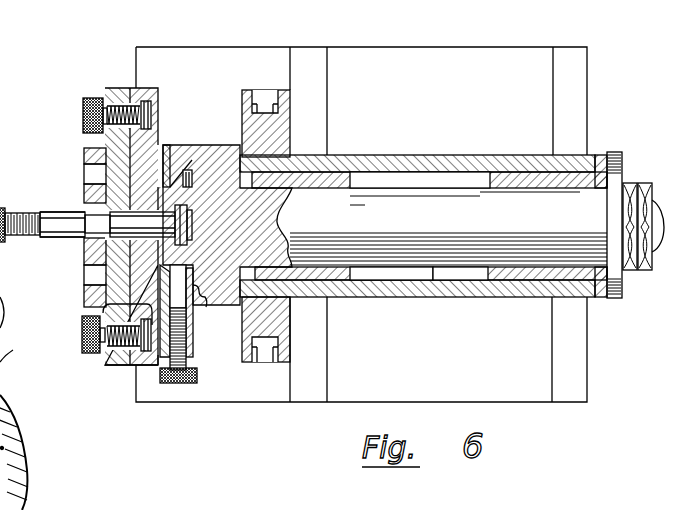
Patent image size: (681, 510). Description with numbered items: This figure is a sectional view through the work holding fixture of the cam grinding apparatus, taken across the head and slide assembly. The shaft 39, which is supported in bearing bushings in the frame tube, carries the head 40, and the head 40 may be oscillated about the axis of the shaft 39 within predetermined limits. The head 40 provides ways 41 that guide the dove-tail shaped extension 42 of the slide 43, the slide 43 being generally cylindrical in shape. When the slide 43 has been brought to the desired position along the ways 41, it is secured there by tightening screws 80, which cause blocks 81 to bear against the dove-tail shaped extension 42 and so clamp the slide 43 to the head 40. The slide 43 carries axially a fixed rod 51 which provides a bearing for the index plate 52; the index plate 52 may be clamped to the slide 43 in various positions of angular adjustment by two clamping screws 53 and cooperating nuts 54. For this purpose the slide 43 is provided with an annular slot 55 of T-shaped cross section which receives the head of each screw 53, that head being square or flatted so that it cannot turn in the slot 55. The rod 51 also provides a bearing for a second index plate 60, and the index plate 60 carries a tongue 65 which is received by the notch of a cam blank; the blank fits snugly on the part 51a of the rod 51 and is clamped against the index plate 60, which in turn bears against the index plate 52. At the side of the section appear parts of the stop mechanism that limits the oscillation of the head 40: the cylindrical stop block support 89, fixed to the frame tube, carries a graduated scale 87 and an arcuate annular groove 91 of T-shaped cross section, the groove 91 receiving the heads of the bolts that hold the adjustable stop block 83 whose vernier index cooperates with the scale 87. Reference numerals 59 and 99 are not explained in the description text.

The shaft 39 is at (433, 242).
The head 40 is at (213, 150).
The ways 41 is at (170, 160).
The dove-tail shaped extension 42 is at (195, 172).
The slide 43 is at (147, 367).
The fixed rod 51 is at (143, 217).
The part of the rod 51a is at (63, 226).
The index plate 52 is at (107, 366).
The clamping screw 53 is at (123, 367).
The nut 54 is at (83, 112).
The annular slot 55 is at (100, 308).
The nut 59 is at (143, 106).
The second index plate 60 is at (86, 152).
The tongue 65 is at (80, 213).
The screw 80 is at (182, 383).
The block 81 is at (183, 290).
The adjustable stop block 83 is at (12, 349).
The graduated scale 87 is at (7, 448).
The stop block support 89 is at (250, 363).
The arcuate annular groove 91 is at (280, 340).
The dial element 99 is at (18, 307).